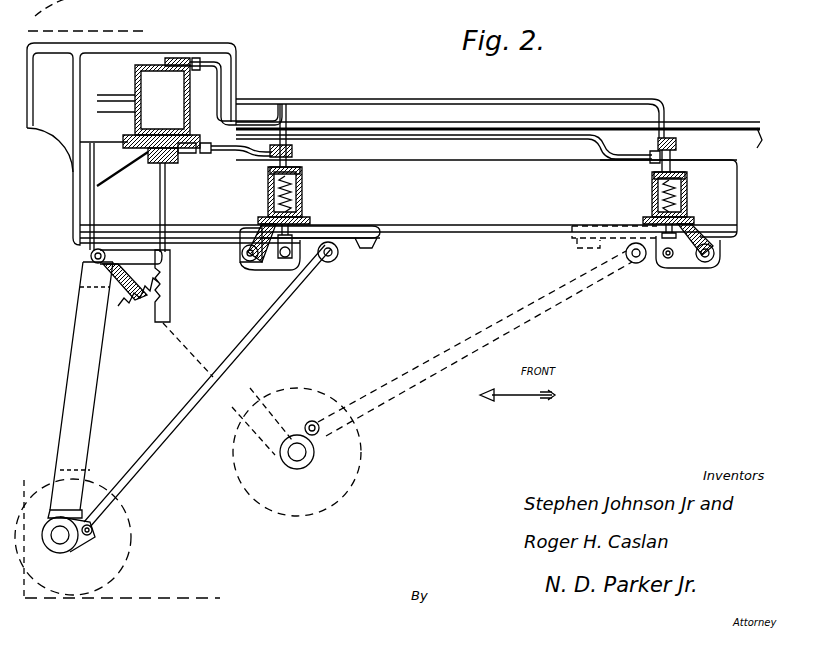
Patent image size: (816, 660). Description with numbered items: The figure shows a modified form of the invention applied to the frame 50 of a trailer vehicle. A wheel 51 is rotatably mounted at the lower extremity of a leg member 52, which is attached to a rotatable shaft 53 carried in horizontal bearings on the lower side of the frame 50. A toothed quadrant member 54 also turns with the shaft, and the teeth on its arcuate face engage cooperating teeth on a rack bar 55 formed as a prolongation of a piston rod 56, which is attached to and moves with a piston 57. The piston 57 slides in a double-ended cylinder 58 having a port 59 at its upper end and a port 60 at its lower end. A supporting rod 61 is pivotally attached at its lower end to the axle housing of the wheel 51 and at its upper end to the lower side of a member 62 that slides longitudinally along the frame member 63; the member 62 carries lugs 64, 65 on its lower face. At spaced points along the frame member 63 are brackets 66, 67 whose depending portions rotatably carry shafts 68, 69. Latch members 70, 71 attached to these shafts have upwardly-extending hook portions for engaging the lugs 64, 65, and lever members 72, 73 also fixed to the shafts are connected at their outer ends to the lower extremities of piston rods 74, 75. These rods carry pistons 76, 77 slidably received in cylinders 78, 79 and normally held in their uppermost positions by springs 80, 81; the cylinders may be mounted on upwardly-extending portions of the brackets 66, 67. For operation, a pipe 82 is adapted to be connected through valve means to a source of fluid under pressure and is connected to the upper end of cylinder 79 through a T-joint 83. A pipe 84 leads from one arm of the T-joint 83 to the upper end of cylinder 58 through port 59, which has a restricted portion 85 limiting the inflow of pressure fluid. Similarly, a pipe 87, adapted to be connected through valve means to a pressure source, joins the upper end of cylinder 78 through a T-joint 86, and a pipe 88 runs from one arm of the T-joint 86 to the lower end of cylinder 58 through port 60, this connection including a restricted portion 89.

The frame 50 is at (58, 146).
The wheel 51 is at (108, 571).
The leg member 52 is at (88, 405).
The rotatable shaft 53 is at (90, 256).
The toothed quadrant member 54 is at (142, 292).
The rack bar 55 is at (164, 309).
The piston rod 56 is at (160, 200).
The piston 57 is at (140, 136).
The double-ended cylinder 58 is at (137, 89).
The port 59 is at (178, 60).
The port 60 is at (178, 152).
The supporting rod 61 is at (249, 344).
The sliding member 62 is at (366, 230).
The frame member 63 is at (472, 233).
The lug 64 is at (262, 232).
The lug 65 is at (370, 248).
The bracket 66 is at (240, 240).
The bracket 67 is at (712, 246).
The shaft 68 is at (243, 256).
The shaft 69 is at (713, 258).
The latch member 70 is at (283, 261).
The latch member 71 is at (668, 260).
The lever member 72 is at (272, 264).
The lever member 73 is at (696, 264).
The piston rod 74 is at (297, 195).
The piston rod 75 is at (676, 191).
The piston 76 is at (298, 181).
The piston 77 is at (681, 178).
The cylinder 78 is at (308, 221).
The cylinder 79 is at (683, 206).
The spring 80 is at (300, 206).
The spring 81 is at (656, 206).
The pipe 82 is at (430, 99).
The T-joint 83 is at (673, 148).
The pipe 84 is at (450, 139).
The restricted portion 85 is at (186, 60).
The T-joint 86 is at (293, 151).
The pipe 87 is at (288, 111).
The pipe 88 is at (216, 151).
The restricted portion 89 is at (185, 150).